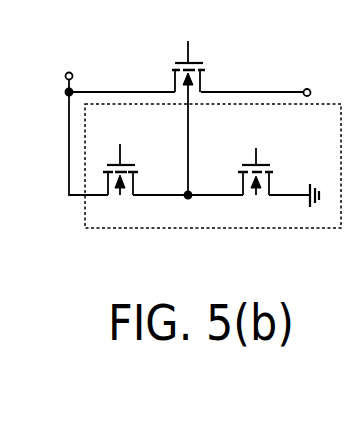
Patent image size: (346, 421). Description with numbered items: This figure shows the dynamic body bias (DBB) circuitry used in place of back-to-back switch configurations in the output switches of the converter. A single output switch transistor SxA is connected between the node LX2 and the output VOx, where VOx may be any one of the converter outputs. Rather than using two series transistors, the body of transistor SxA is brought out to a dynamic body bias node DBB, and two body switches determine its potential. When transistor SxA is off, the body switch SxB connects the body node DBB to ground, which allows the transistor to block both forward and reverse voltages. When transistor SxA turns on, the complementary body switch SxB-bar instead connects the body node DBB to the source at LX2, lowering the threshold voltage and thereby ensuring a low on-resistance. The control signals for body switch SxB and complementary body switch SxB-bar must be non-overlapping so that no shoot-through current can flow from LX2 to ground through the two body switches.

The LX2 node LX2 is at (114, 122).
The output VOx is at (264, 82).
The output switch transistor SxA is at (189, 104).
The body switch SxB is at (124, 157).
The complementary body switch SxB-bar is at (273, 120).
The dynamic body bias node DBB is at (188, 207).